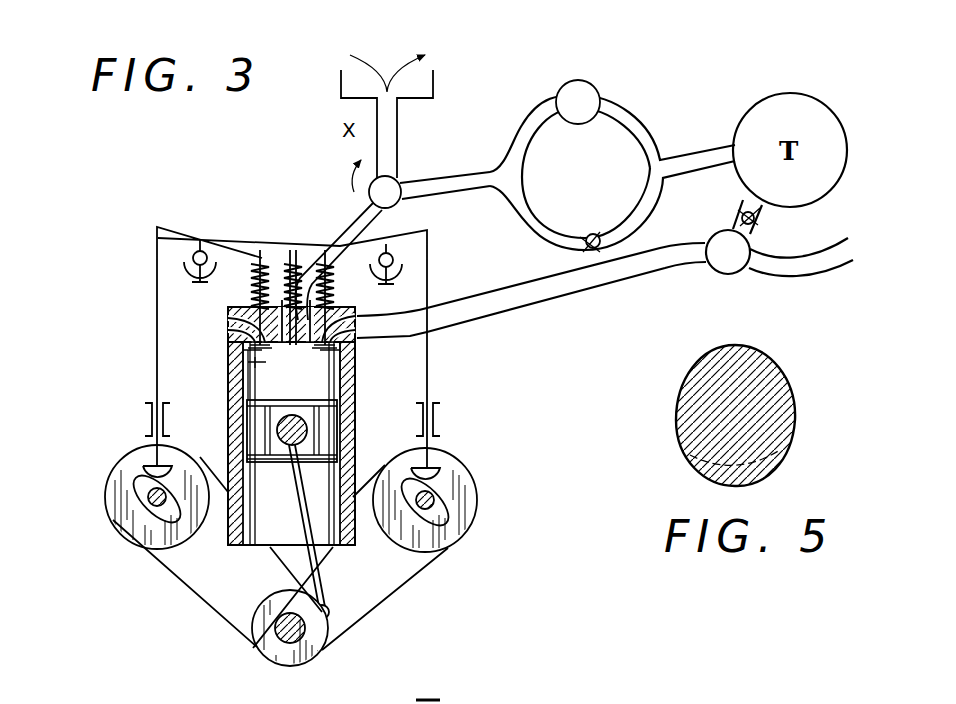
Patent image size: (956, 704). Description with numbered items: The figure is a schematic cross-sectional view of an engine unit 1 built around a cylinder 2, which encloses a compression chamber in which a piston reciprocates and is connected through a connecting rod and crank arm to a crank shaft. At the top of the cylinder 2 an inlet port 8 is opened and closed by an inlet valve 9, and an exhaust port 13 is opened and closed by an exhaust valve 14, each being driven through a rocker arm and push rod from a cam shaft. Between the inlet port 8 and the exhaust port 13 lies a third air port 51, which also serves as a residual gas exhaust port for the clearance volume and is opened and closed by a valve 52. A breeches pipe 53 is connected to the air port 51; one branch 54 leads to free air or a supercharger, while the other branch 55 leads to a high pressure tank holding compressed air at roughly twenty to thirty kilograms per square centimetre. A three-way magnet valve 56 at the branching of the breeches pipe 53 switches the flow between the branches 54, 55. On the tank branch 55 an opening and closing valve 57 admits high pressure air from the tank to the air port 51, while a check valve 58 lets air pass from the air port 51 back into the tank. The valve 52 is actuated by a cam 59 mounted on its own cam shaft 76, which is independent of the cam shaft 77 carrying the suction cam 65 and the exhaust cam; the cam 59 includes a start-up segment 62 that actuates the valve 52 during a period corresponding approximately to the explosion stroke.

In FIG. 3, the engine unit 1 is at (205, 228).
In FIG. 3, the cylinder 2 is at (230, 403).
In FIG. 3, the inlet port 8 is at (230, 320).
In FIG. 3, the inlet valve 9 is at (230, 372).
In FIG. 3, the exhaust port 13 is at (367, 333).
In FIG. 3, the exhaust valve 14 is at (357, 380).
In FIG. 3, the air port 51 is at (303, 330).
In FIG. 3, the valve 52 is at (270, 307).
In FIG. 3, the breeches pipe 53 is at (356, 213).
In FIG. 3, the branch 54 is at (398, 127).
In FIG. 3, the branch 55 is at (697, 143).
In FIG. 3, the 3-way magnet valve 56 is at (400, 178).
In FIG. 3, the opening and closing valve 57 is at (586, 92).
In FIG. 3, the check valve 58 is at (592, 232).
In FIG. 3, the cam 59 is at (440, 480).
In FIG. 5, the start-up segment 62 is at (760, 478).
In FIG. 3, the cam for inlet valve 65 is at (150, 490).
In FIG. 3, the cam shaft 76 is at (440, 505).
In FIG. 3, the cam shaft 77 is at (147, 505).